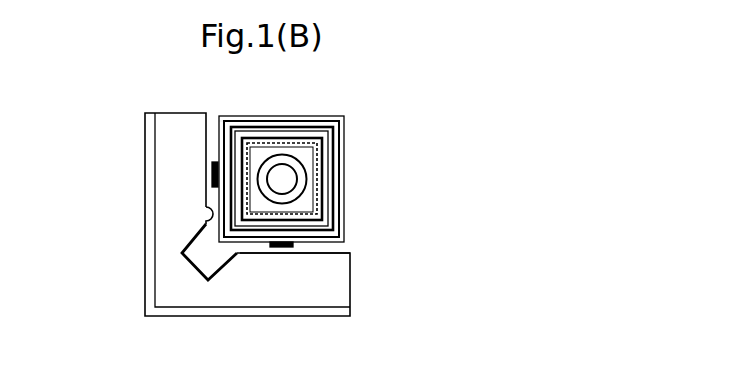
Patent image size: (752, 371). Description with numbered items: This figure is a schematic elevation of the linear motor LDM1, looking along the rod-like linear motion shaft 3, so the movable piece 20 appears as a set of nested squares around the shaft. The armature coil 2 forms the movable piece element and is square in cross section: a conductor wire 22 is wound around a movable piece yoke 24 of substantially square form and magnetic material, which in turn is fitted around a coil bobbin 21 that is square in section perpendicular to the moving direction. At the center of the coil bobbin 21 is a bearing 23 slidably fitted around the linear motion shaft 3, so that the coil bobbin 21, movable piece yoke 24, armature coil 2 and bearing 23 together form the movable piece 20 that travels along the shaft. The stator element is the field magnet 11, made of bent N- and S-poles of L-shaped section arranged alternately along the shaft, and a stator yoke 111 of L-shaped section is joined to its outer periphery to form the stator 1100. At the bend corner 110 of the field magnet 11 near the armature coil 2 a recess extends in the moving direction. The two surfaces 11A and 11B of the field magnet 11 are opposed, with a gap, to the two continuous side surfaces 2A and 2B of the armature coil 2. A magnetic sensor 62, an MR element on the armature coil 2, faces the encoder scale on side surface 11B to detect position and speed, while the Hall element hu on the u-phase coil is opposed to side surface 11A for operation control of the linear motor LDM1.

The linear motor LDM1 is at (457, 170).
The stator 1100 is at (143, 128).
The field magnet 11 is at (168, 170).
The surface of field magnet 11A is at (255, 249).
The side surface of field magnet 11B is at (203, 223).
The bend corner 110 is at (210, 252).
The stator yoke 111 is at (190, 310).
The magnetic sensor 62 is at (212, 177).
The Hall element hu is at (287, 249).
The armature coil 2 is at (347, 128).
The side surface of armature coil 2A is at (305, 254).
The side surface of armature coil 2B is at (206, 147).
The movable piece 20 is at (293, 113).
The conductor wire 22 is at (300, 125).
The coil bobbin 21 is at (307, 203).
The movable piece yoke 24 is at (315, 213).
The bearing 23 is at (300, 181).
The linear motion shaft 3 is at (287, 172).